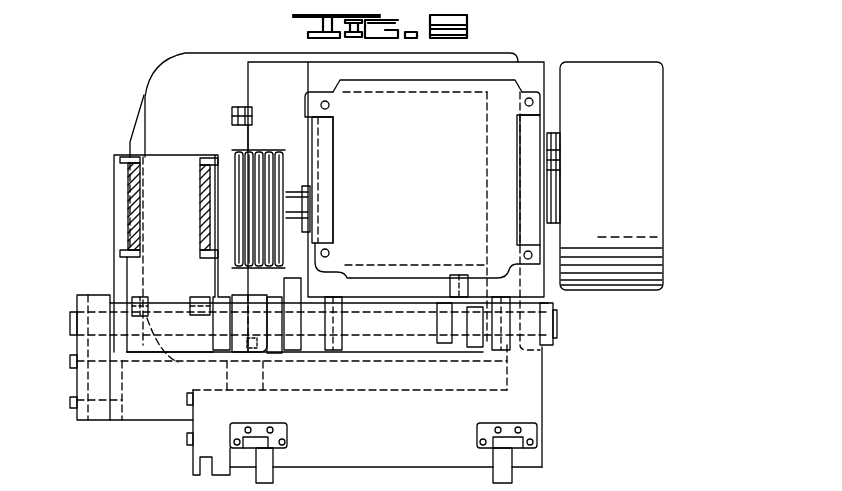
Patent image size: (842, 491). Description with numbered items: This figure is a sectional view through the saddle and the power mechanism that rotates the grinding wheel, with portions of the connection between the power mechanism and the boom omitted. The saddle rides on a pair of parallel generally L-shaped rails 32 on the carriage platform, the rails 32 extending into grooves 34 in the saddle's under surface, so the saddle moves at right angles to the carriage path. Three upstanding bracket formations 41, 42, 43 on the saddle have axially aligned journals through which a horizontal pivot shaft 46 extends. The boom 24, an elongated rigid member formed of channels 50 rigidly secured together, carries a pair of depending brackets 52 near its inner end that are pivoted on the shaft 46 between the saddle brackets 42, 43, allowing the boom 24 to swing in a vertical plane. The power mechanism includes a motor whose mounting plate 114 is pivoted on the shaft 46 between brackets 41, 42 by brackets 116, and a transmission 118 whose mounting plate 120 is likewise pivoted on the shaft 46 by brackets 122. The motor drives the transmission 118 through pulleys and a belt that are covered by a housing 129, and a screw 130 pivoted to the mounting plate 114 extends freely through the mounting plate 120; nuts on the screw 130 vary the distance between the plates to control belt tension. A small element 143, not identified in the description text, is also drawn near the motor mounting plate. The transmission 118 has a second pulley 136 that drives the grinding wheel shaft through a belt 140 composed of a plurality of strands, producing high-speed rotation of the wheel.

The boom 24 is at (130, 186).
The rails 32 is at (262, 468).
The grooves 34 is at (257, 440).
The bracket formation 41 is at (553, 322).
The bracket formation 42 is at (262, 323).
The bracket formation 43 is at (85, 345).
The pivot shaft 46 is at (170, 309).
The channels 50 is at (201, 200).
The depending brackets 52 is at (116, 266).
The mounting plate 114 is at (268, 73).
The brackets 116 is at (289, 280).
The transmission 118 is at (428, 146).
The mounting plate 120 is at (332, 92).
The brackets 122 is at (333, 350).
The housing 129 is at (648, 128).
The screw 130 is at (321, 103).
The second pulley 136 is at (287, 166).
The belt 140 is at (242, 152).
The terminal block 143 is at (234, 106).